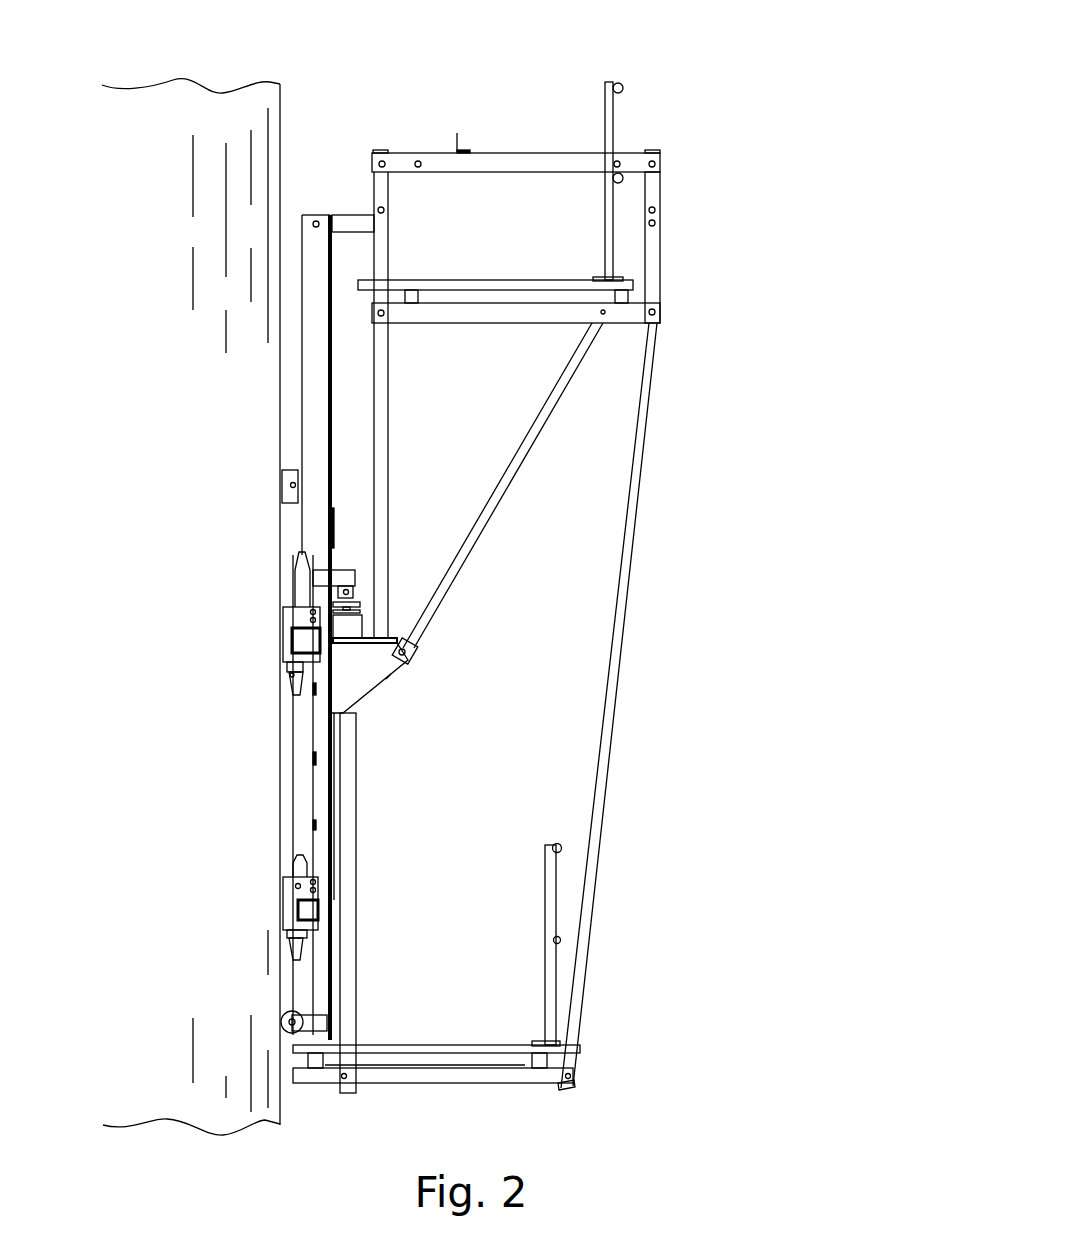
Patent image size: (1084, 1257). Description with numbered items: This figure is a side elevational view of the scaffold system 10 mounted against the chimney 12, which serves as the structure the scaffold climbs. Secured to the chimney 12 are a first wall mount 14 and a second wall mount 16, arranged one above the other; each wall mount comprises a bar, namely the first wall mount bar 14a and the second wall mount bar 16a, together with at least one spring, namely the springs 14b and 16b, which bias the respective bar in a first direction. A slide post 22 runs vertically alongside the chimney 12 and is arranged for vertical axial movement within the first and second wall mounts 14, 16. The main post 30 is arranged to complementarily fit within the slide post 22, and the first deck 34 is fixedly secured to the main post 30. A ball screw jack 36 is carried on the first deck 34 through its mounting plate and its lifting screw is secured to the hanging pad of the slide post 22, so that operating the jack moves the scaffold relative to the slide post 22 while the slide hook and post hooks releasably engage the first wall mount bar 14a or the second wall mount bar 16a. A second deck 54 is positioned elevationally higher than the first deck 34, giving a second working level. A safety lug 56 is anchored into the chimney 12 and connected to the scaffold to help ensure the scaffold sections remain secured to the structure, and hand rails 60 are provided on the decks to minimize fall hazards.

The scaffold system 10 is at (709, 88).
The chimney 12 is at (281, 146).
The first wall mount 14 is at (293, 622).
The first wall mount bar 14a is at (291, 641).
The first wall mount spring 14b is at (312, 620).
The second wall mount 16 is at (297, 887).
The second wall mount bar 16a is at (292, 912).
The second wall mount spring 16b is at (300, 865).
The slide post 22 is at (291, 772).
The main post 30 is at (316, 365).
The first deck 34 is at (400, 1048).
The ball screw jack 36 is at (370, 614).
The second deck 54 is at (553, 283).
The safety lug 56 is at (290, 465).
The hand rails 60 is at (623, 88).